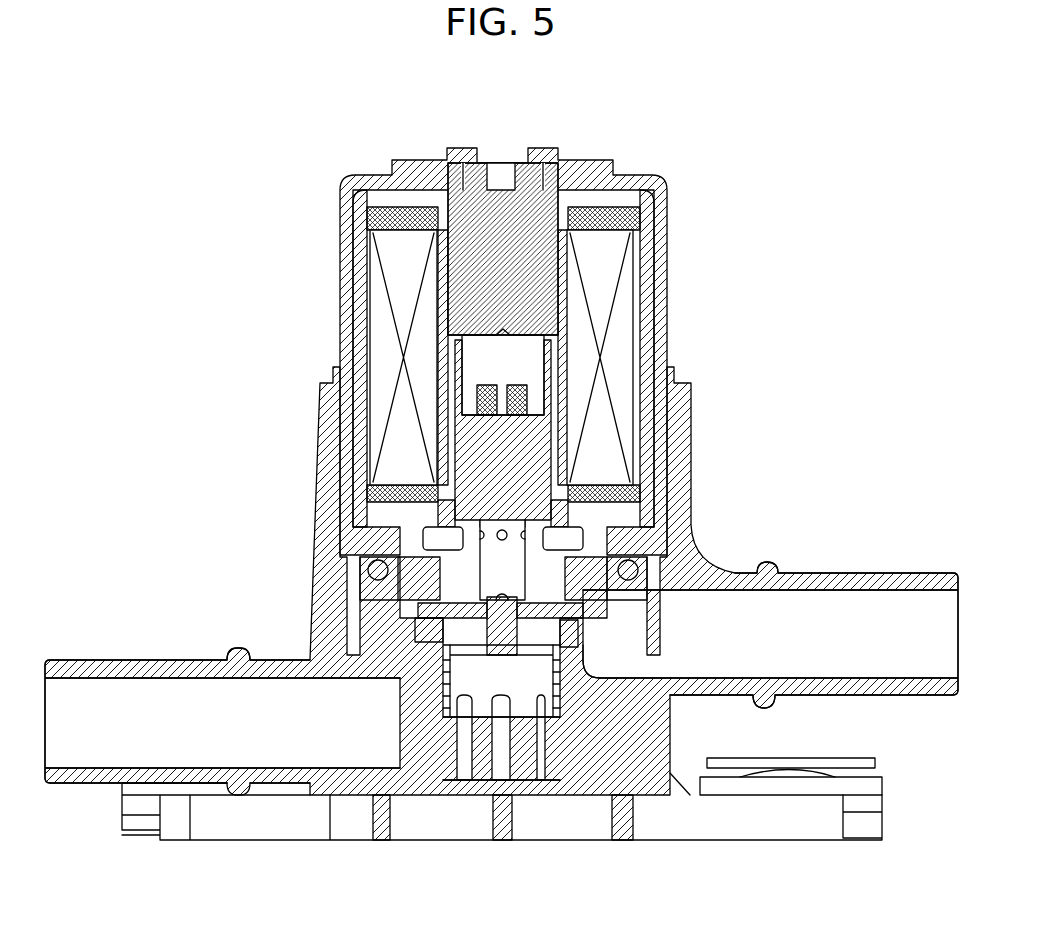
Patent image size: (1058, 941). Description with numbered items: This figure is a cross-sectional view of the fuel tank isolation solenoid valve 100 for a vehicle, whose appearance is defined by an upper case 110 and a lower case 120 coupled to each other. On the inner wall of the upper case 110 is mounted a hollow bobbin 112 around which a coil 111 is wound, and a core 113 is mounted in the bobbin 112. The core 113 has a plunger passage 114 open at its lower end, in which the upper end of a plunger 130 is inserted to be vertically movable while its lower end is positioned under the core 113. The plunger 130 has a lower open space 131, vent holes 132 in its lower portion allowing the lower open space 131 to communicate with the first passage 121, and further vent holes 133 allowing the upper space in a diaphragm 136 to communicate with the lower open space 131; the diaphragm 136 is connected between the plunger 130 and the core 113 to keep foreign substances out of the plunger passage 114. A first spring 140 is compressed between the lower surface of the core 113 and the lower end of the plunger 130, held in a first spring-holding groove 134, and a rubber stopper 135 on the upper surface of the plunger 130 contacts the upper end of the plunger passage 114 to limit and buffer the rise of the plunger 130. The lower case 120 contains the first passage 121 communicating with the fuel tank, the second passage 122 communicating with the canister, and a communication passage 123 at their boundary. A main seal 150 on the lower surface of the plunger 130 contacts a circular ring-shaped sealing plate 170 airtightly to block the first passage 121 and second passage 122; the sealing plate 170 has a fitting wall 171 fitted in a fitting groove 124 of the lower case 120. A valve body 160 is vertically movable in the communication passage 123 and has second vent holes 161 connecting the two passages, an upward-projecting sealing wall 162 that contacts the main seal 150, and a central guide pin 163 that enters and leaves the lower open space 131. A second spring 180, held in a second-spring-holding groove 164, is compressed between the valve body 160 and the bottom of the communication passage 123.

The fuel tank isolation solenoid valve 100 is at (333, 143).
The upper case 110 is at (340, 287).
The coil 111 is at (393, 263).
The bobbin 112 is at (568, 262).
The core 113 is at (527, 205).
The plunger passage 114 is at (552, 372).
The lower case 120 is at (310, 507).
The first passage 121 is at (787, 628).
The second passage 122 is at (282, 740).
The communication passage 123 is at (495, 700).
The fitting groove 124 is at (580, 680).
The plunger 130 is at (455, 437).
The lower open space 131 is at (440, 505).
The vent holes 132 is at (700, 566).
The vent holes 133 is at (598, 497).
The first spring-holding groove 134 is at (400, 542).
The rubber stopper 135 is at (455, 355).
The diaphragm 136 is at (387, 590).
The first spring 140 is at (553, 540).
The main seal 150 is at (445, 700).
The valve body 160 is at (522, 740).
The second vent holes 161 is at (553, 700).
The sealing wall 162 is at (522, 607).
The guide pin 163 is at (430, 620).
The second-spring-holding groove 164 is at (462, 690).
The sealing plate 170 is at (598, 632).
The fitting wall 171 is at (560, 652).
The second spring 180 is at (588, 690).